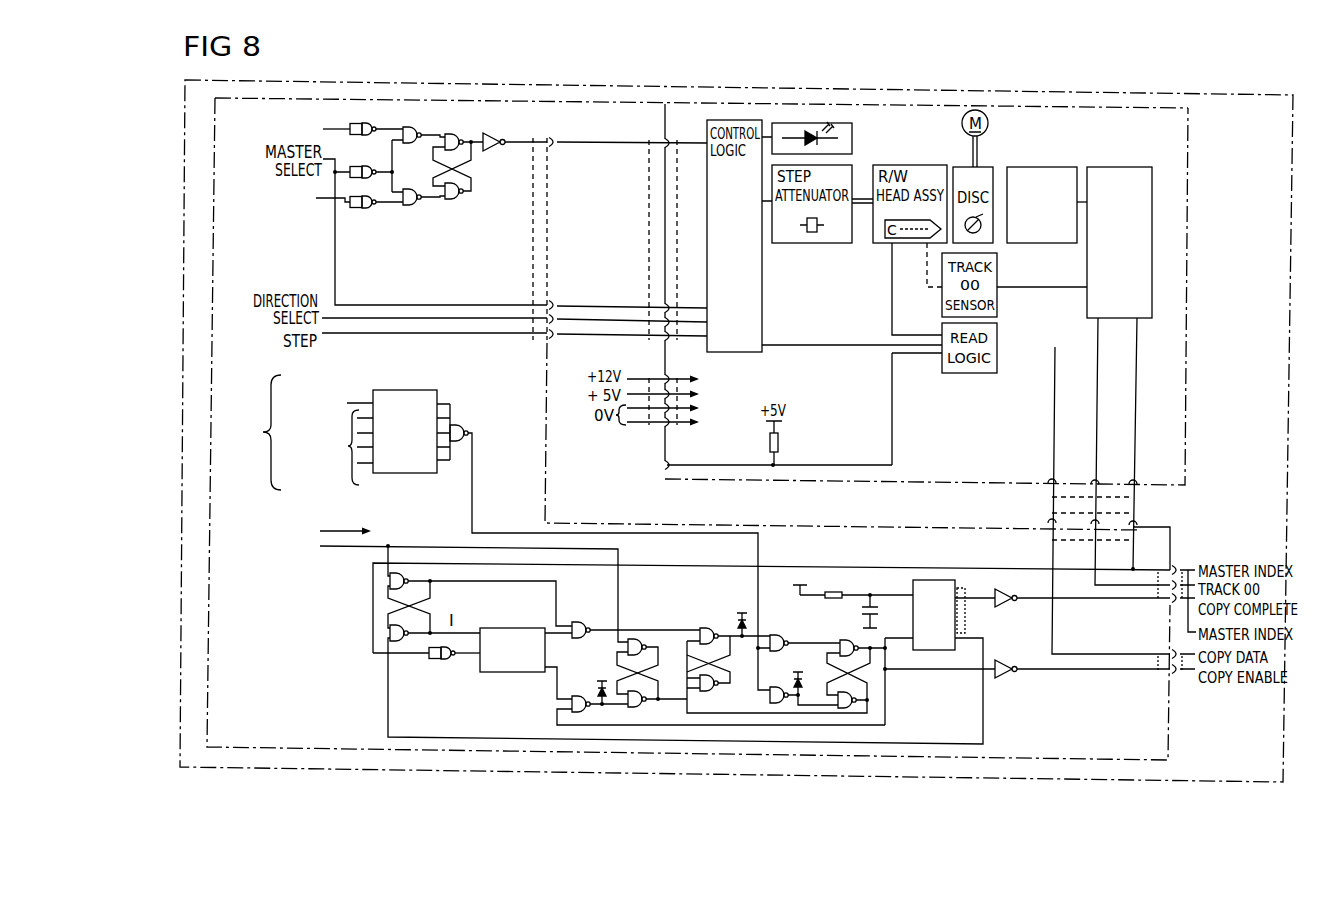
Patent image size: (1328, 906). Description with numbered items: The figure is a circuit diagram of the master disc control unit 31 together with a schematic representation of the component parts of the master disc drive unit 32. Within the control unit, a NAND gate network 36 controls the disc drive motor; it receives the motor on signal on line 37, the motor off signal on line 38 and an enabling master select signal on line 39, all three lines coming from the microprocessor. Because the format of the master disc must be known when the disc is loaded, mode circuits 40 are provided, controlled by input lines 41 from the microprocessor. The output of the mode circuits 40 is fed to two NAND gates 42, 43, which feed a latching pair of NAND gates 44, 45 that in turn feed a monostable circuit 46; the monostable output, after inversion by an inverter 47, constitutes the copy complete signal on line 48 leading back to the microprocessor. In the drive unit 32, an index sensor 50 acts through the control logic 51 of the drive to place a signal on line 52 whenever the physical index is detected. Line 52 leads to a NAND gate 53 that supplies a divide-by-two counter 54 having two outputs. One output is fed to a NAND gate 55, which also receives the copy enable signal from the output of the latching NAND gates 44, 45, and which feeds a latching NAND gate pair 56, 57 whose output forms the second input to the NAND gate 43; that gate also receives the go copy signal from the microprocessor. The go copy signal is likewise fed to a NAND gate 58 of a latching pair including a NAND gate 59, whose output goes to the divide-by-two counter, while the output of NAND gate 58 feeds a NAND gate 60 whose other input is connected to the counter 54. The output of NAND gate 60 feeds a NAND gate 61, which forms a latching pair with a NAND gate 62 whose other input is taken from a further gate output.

The master disc control unit 31 is at (678, 83).
The master disc drive unit 32 is at (882, 105).
The NAND gate network 36 is at (437, 127).
The motor on line 37 is at (343, 125).
The motor off line 38 is at (327, 200).
The master select line 39 is at (332, 128).
The mode circuits 40 is at (415, 462).
The input lines 41 is at (365, 473).
The NAND gate 42 is at (778, 637).
The NAND gate 43 is at (778, 688).
The latching NAND gate 44 is at (849, 642).
The latching NAND gate 45 is at (858, 709).
The monostable circuit 46 is at (927, 597).
The inverter 47 is at (1004, 605).
The copy complete line 48 is at (1100, 600).
The index sensor 50 is at (1048, 167).
The control logic 51 is at (1116, 167).
The index signal line 52 is at (900, 566).
The NAND gate 53 is at (447, 662).
The divide-by-two counter 54 is at (508, 652).
The NAND gate 55 is at (560, 707).
The latching NAND gate 56 is at (632, 642).
The latching NAND gate 57 is at (645, 705).
The NAND gate 58 is at (392, 585).
The NAND gate 59 is at (410, 645).
The NAND gate 60 is at (576, 623).
The NAND gate 61 is at (714, 628).
The NAND gate 62 is at (716, 687).